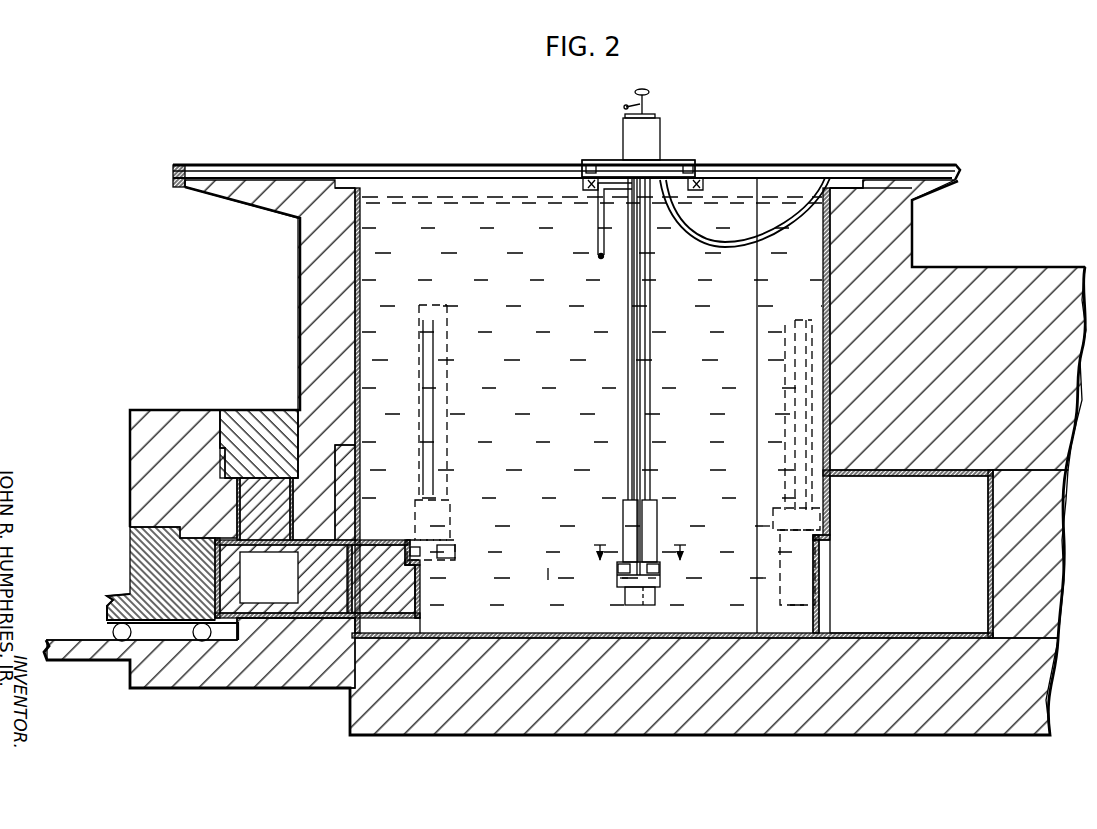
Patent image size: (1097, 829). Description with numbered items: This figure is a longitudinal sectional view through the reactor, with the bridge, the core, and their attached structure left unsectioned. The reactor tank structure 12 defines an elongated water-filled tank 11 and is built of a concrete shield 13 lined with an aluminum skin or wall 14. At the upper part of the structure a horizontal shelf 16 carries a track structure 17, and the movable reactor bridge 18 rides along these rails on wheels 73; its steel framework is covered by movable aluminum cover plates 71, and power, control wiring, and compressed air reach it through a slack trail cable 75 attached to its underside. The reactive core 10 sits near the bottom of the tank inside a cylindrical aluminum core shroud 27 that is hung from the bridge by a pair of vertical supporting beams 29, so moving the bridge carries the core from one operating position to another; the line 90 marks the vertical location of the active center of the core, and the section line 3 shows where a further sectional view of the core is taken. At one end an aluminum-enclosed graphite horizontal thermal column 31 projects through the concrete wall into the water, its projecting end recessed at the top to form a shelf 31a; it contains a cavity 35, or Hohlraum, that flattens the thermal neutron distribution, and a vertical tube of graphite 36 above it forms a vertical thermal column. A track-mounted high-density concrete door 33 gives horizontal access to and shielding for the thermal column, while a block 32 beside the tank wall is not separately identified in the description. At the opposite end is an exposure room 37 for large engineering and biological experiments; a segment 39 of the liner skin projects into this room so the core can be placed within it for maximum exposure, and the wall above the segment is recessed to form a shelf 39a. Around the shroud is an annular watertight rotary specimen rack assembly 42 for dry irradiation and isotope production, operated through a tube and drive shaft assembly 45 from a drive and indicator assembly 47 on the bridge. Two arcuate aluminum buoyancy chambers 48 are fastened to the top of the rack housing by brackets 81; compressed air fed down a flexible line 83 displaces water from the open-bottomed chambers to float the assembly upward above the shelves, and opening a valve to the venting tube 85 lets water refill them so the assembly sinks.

The section line 3- 3 is at (639, 539).
The reactive core 10 is at (645, 568).
The tank 11 is at (548, 360).
The reactor tank structure 12 is at (297, 298).
The concrete shield 13 is at (944, 338).
The skin or wall 14 is at (361, 356).
The horizontal shelf 16 is at (961, 173).
The track structure 17 is at (815, 165).
The movable reactor bridge 18 is at (702, 168).
The core shroud 27 is at (628, 602).
The supporting beams 29 is at (628, 294).
The horizontal thermal column 31 is at (375, 545).
The shelf 31a is at (420, 566).
The shield block 32 is at (346, 472).
The high density concrete door 33 is at (142, 568).
The cavity 35 is at (272, 605).
The vertical tube of graphite 36 is at (270, 520).
The exposure room 37 is at (931, 563).
The segment of the aluminum pool liner skin 39 is at (820, 580).
The shelf 39a is at (830, 530).
The rotary specimen rack assembly 42 is at (662, 586).
The tube and drive shaft assembly 45 is at (652, 330).
The drive and indicator assembly 47 is at (664, 122).
The buoyancy chambers 48 is at (618, 572).
The movable aluminum cover plates 71 is at (672, 162).
The wheels 73 is at (583, 190).
The trail cable 75 is at (718, 242).
The brackets 81 is at (620, 580).
The flexible line 83 is at (652, 348).
The venting tube 85 is at (600, 254).
The line 90 is at (543, 580).